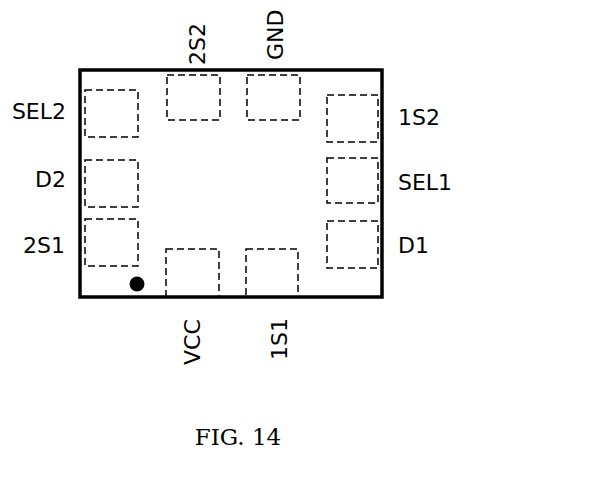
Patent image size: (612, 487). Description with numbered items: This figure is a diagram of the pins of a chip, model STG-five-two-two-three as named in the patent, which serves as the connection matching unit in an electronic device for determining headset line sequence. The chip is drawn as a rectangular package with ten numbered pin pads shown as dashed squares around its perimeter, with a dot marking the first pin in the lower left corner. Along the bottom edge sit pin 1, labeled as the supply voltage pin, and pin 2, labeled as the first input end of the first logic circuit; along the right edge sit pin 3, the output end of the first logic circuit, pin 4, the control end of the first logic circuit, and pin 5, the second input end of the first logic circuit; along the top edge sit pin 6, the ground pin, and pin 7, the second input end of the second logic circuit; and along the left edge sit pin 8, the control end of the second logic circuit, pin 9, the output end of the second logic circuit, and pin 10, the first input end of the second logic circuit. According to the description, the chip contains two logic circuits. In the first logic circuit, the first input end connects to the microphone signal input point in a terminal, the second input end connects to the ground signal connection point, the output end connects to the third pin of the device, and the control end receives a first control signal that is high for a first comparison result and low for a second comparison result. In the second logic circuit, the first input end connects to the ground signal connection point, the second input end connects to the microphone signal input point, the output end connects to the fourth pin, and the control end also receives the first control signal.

The VCC pin 1 is at (192, 273).
The 1S1 pin 2 is at (272, 273).
The D1 pin 3 is at (352, 244).
The SEL1 pin 4 is at (352, 180).
The 1S2 pin 5 is at (352, 118).
The GND pin 6 is at (273, 97).
The 2S2 pin 7 is at (193, 97).
The SEL2 pin 8 is at (111, 113).
The D2 pin 9 is at (111, 183).
The 2S1 pin 10 is at (111, 242).